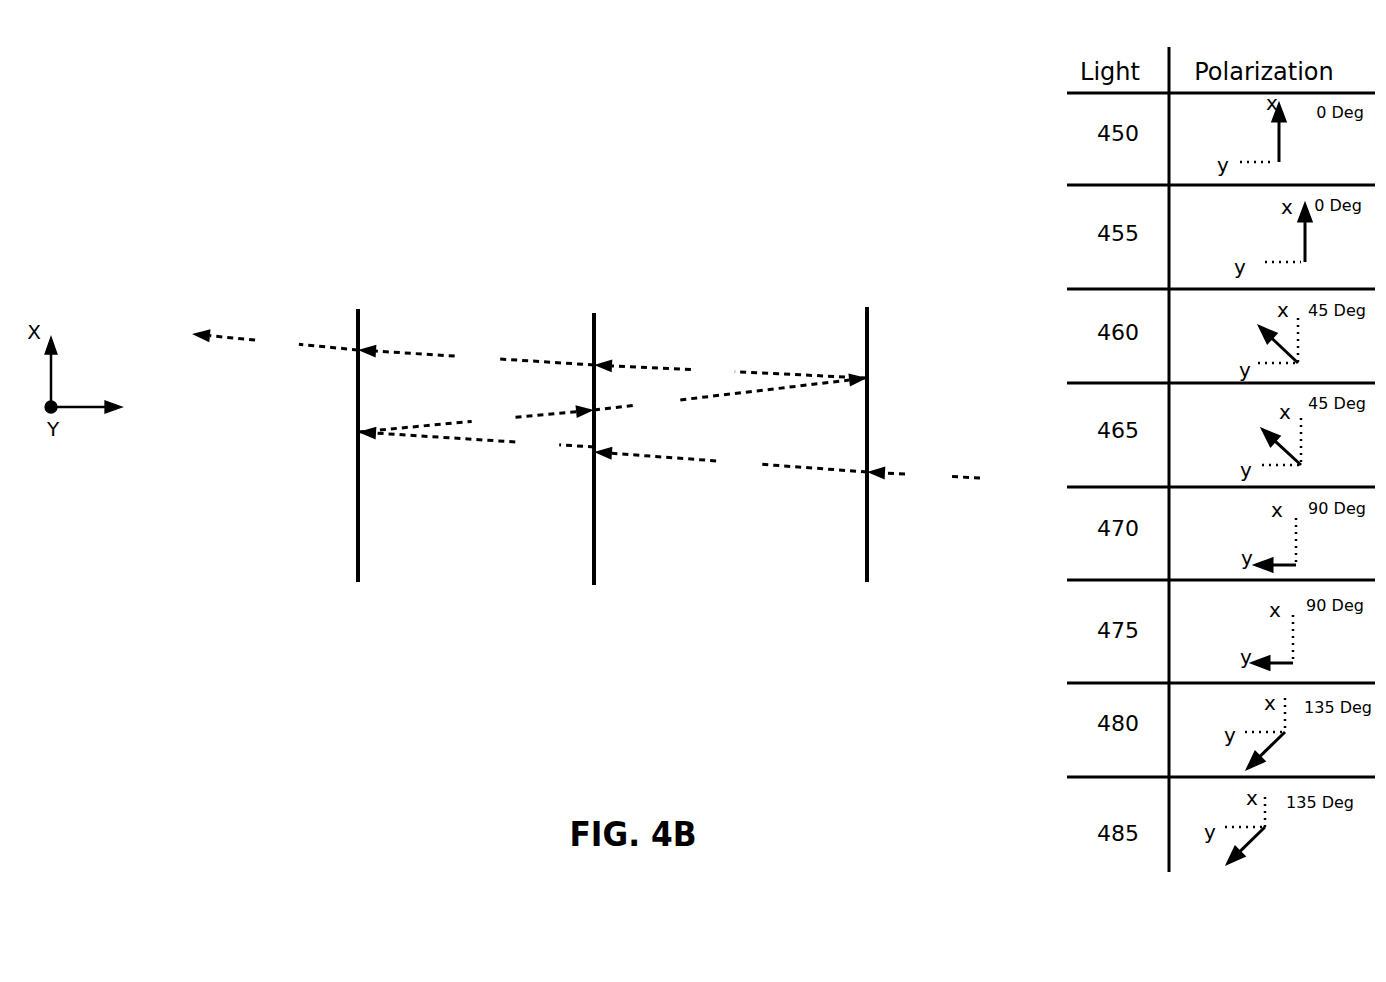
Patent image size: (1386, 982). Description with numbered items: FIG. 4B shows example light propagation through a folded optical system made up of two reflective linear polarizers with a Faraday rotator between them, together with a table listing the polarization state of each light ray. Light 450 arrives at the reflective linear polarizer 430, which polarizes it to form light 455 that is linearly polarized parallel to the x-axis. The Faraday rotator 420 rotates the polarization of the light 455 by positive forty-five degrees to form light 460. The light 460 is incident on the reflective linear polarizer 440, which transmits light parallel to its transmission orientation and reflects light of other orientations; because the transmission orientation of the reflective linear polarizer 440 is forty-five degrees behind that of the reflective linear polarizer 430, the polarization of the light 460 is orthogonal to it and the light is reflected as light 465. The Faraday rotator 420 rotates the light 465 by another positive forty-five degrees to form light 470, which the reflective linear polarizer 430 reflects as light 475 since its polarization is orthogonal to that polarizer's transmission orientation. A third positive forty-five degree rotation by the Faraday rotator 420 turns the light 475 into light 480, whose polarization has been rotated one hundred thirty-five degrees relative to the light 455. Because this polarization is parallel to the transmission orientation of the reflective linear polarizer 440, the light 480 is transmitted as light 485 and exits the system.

The Faraday rotator 420 is at (594, 318).
The reflective linear polarizer 430 is at (872, 335).
The reflective linear polarizer 440 is at (358, 338).
The light 450 is at (923, 475).
The light 455 is at (730, 460).
The light 460 is at (476, 442).
The light 465 is at (476, 417).
The light 470 is at (730, 392).
The light 475 is at (730, 368).
The light 480 is at (476, 353).
The light 485 is at (275, 341).